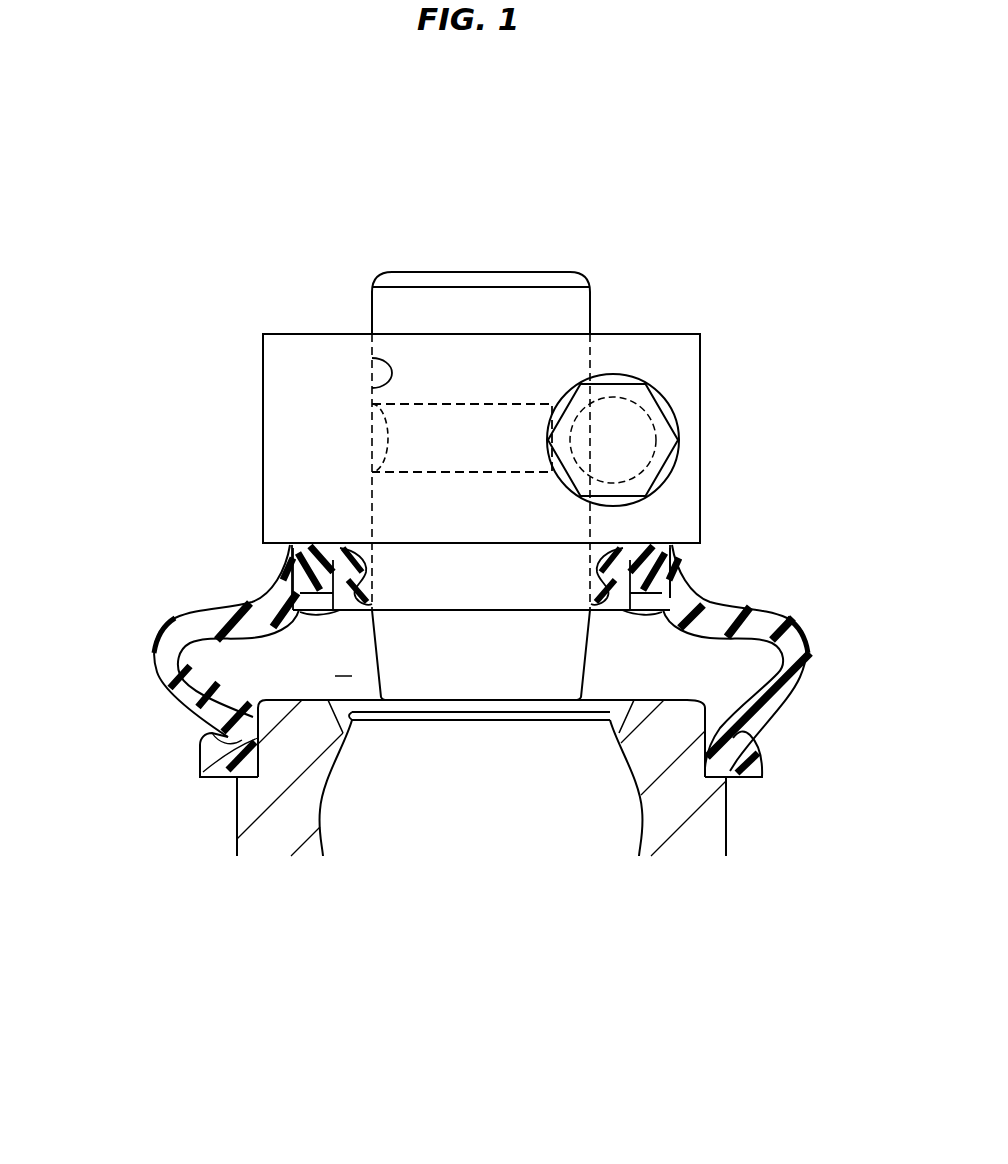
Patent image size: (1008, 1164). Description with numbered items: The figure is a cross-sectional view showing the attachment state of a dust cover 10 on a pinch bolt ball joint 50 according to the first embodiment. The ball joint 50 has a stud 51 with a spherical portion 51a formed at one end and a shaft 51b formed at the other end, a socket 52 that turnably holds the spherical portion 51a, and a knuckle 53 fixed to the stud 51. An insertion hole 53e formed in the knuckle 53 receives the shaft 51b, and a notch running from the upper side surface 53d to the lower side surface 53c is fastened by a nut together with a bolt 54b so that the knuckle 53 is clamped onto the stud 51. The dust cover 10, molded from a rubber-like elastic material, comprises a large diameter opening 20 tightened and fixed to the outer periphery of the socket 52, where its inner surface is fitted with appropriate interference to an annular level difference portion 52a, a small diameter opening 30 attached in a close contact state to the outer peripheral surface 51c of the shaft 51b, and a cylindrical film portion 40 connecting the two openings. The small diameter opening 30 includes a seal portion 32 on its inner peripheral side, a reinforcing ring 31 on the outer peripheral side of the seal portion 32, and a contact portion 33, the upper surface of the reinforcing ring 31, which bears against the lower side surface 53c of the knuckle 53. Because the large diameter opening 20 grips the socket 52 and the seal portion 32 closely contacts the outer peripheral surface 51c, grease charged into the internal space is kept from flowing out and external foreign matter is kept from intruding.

The dust cover 10 is at (132, 666).
The large diameter opening 20 is at (762, 771).
The small diameter opening 30 is at (273, 583).
The reinforcing ring 31 is at (312, 543).
The seal portion 32 is at (340, 610).
The contact portion 33 is at (328, 543).
The cylindrical film portion 40 is at (807, 628).
The pinch bolt ball joint 50 is at (341, 241).
The stud 51 is at (602, 666).
The spherical portion 51a is at (583, 806).
The shaft 51b is at (568, 307).
The outer peripheral surface 51c is at (683, 582).
The socket 52 is at (688, 828).
The annular level difference portion 52a is at (200, 777).
The knuckle 53 is at (684, 375).
The lower side surface 53c is at (688, 549).
The upper side surface 53d is at (628, 333).
The insertion hole 53e is at (373, 388).
The bolt 54b is at (678, 440).